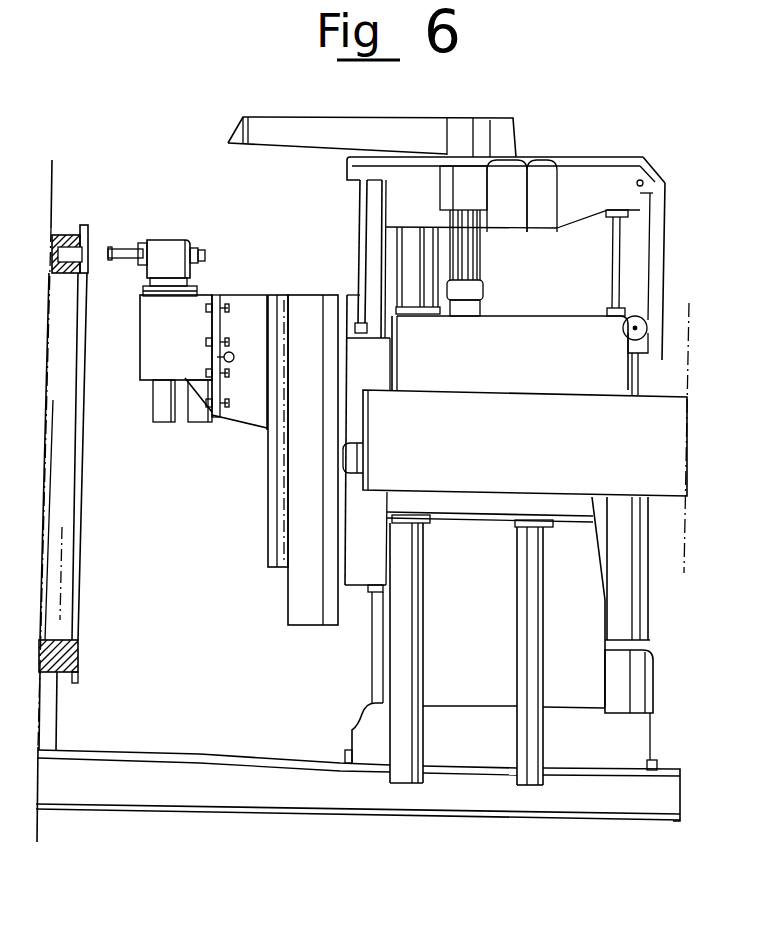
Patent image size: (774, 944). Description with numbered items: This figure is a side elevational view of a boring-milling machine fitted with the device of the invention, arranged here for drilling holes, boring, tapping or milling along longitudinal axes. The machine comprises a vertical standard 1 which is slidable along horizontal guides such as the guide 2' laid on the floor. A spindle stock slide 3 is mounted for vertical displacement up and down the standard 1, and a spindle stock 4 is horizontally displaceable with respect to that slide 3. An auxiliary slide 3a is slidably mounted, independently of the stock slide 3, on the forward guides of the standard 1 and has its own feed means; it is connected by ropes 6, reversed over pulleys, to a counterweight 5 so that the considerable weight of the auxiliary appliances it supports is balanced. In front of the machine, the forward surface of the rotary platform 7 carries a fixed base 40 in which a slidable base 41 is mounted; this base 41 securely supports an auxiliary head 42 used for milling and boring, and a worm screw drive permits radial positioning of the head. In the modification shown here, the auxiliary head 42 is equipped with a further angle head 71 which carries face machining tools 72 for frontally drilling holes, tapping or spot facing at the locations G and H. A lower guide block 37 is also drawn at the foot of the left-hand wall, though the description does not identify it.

The vertical standard 1 is at (522, 641).
The horizontal guide 2' is at (358, 807).
The spindle stock slide 3 is at (579, 334).
The auxiliary slide 3a is at (383, 372).
The spindle stock 4 is at (659, 410).
The counterweight 5 is at (640, 580).
The ropes 6 is at (362, 233).
The rotary platform 7 is at (302, 598).
The lower guide block 37 is at (79, 662).
The fixed base 40 is at (280, 478).
The slidable base 41 is at (233, 410).
The auxiliary head 42 is at (129, 401).
The angle head 71 is at (168, 251).
The face machining tools 72 is at (117, 248).
The spot facing location G is at (74, 263).
The spot facing location H is at (67, 236).